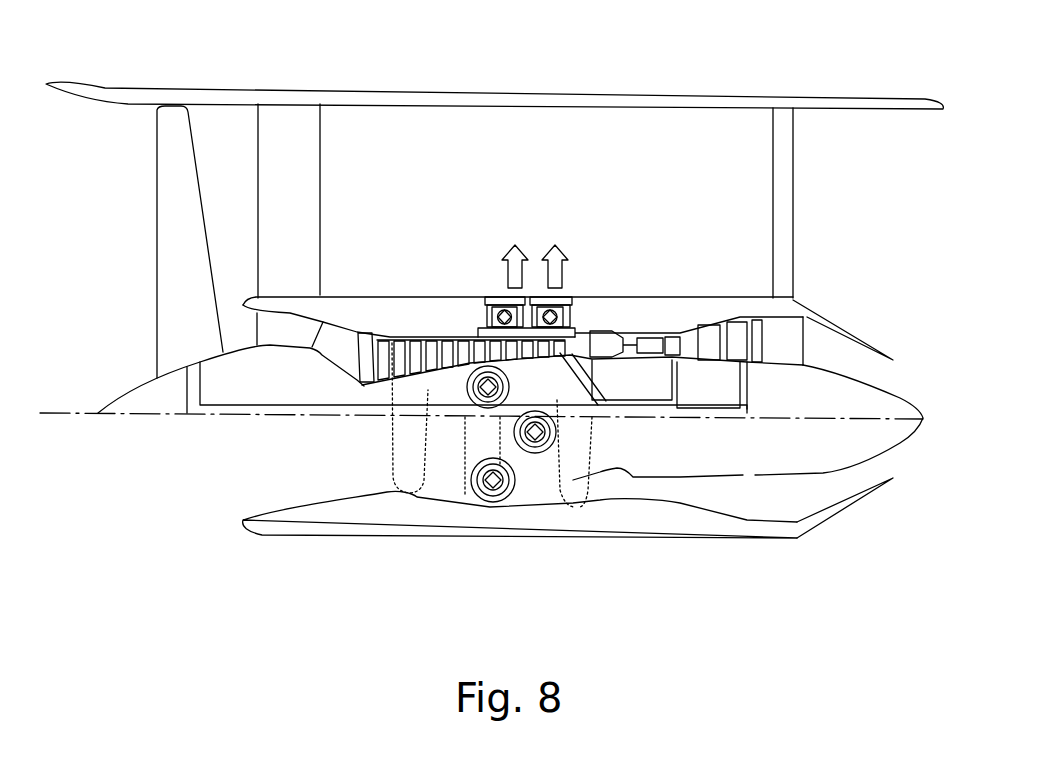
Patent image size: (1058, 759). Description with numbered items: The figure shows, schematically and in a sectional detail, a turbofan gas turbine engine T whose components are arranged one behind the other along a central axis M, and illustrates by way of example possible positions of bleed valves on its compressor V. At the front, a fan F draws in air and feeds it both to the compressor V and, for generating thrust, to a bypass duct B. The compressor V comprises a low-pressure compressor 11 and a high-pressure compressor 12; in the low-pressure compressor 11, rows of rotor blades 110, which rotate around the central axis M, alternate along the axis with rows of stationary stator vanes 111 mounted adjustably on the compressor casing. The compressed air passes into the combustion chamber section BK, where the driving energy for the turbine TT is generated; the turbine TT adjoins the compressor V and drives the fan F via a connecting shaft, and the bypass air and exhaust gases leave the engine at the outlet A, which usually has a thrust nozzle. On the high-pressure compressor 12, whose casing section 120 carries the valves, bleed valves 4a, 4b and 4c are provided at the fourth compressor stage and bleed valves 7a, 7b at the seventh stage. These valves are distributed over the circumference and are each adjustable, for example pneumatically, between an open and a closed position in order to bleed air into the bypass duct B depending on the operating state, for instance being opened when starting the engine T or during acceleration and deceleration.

The bypass duct B is at (603, 140).
The gas turbine engine T is at (826, 90).
The fan F is at (183, 272).
The stator vanes 111 is at (420, 337).
The compressor V is at (432, 313).
The low-pressure compressor 11 is at (447, 327).
The bleed valve 4a is at (497, 297).
The bleed valve 7a is at (568, 298).
The high-pressure compressor 12 is at (583, 339).
The combustion chamber section BK is at (612, 332).
The outlet A is at (893, 368).
The central axis M is at (923, 417).
The rotor blades 110 is at (364, 386).
The bleed valve 4b is at (468, 392).
The bleed valve 4c is at (490, 505).
The casing section 120 is at (528, 493).
The bleed valve 7b is at (537, 455).
The turbine TT is at (763, 489).